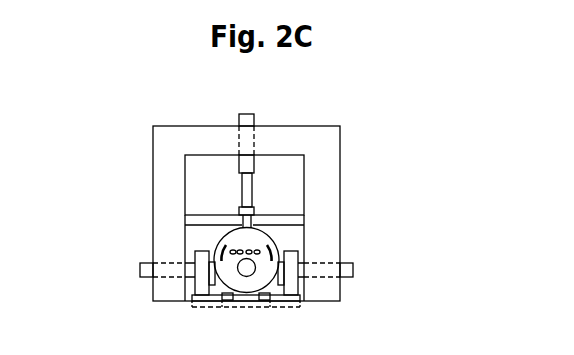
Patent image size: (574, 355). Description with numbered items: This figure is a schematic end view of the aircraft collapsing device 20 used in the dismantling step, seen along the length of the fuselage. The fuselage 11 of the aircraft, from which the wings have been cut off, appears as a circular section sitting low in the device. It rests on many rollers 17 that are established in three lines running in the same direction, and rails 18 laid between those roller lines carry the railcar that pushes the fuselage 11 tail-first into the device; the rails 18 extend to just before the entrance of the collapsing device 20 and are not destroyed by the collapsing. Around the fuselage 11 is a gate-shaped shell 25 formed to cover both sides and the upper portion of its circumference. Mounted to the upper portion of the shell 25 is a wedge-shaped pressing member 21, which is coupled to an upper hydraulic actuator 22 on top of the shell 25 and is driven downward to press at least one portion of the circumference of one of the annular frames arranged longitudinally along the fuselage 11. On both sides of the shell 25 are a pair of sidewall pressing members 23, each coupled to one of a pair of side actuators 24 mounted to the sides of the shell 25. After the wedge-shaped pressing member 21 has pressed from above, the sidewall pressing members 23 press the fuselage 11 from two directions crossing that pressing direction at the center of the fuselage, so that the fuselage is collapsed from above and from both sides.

The collapsing device 20 is at (137, 183).
The gate-shaped shell 25 is at (170, 148).
The upper hydraulic actuator 22 is at (240, 116).
The wedge-shaped pressing member 21 is at (252, 200).
The fuselage 11 is at (268, 235).
The sidewall pressing members 23 is at (197, 255).
The side actuators 24 is at (140, 270).
The rollers 17 is at (288, 307).
The rails 18 is at (230, 301).